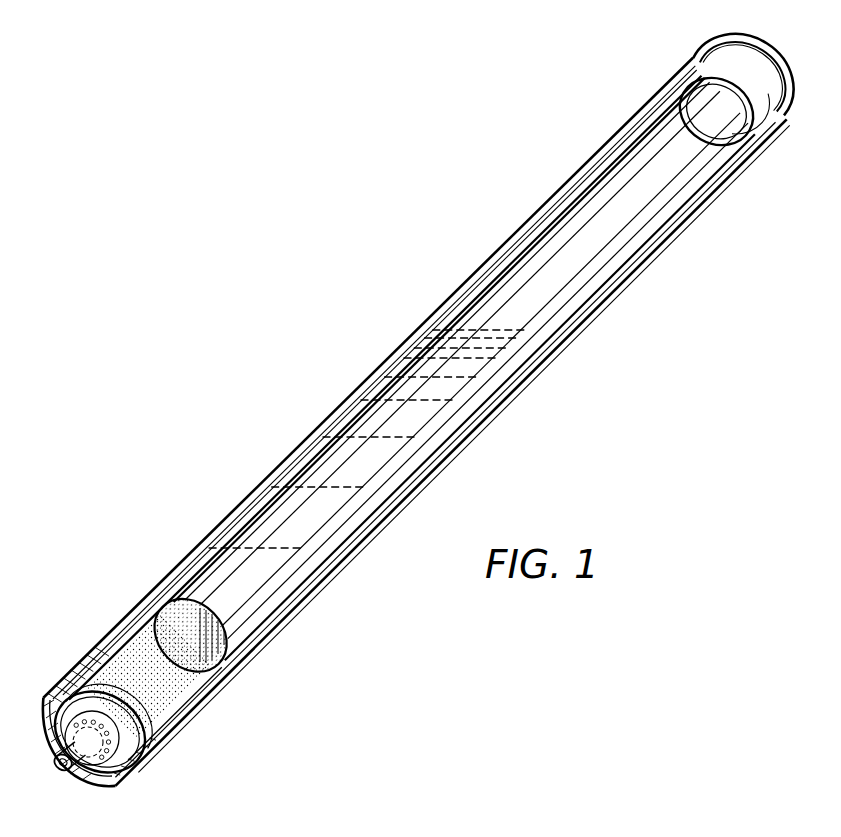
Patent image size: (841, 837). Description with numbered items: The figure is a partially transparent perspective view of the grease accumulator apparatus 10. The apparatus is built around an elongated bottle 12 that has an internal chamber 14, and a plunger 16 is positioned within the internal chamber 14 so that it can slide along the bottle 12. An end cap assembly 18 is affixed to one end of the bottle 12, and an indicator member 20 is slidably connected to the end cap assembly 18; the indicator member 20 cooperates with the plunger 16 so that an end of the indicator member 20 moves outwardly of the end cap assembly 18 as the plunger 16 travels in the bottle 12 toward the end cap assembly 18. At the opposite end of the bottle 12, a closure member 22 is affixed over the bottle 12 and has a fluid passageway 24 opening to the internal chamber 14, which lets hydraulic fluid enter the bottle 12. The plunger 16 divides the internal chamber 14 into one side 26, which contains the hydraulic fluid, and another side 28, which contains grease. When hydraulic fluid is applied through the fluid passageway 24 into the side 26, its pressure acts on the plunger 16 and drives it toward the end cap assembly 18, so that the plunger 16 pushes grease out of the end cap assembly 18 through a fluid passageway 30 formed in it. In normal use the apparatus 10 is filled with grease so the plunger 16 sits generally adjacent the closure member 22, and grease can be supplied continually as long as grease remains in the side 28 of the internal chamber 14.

The grease accumulator apparatus 10 is at (360, 350).
The bottle 12 is at (480, 422).
The internal chamber 14 is at (487, 300).
The plunger 16 is at (242, 657).
The end cap assembly 18 is at (152, 737).
The indicator member 20 is at (68, 772).
The closure member 22 is at (752, 136).
The fluid passageway 24 is at (688, 96).
The one side 26 is at (252, 522).
The another side 28 is at (135, 642).
The fluid passageway 30 is at (82, 707).